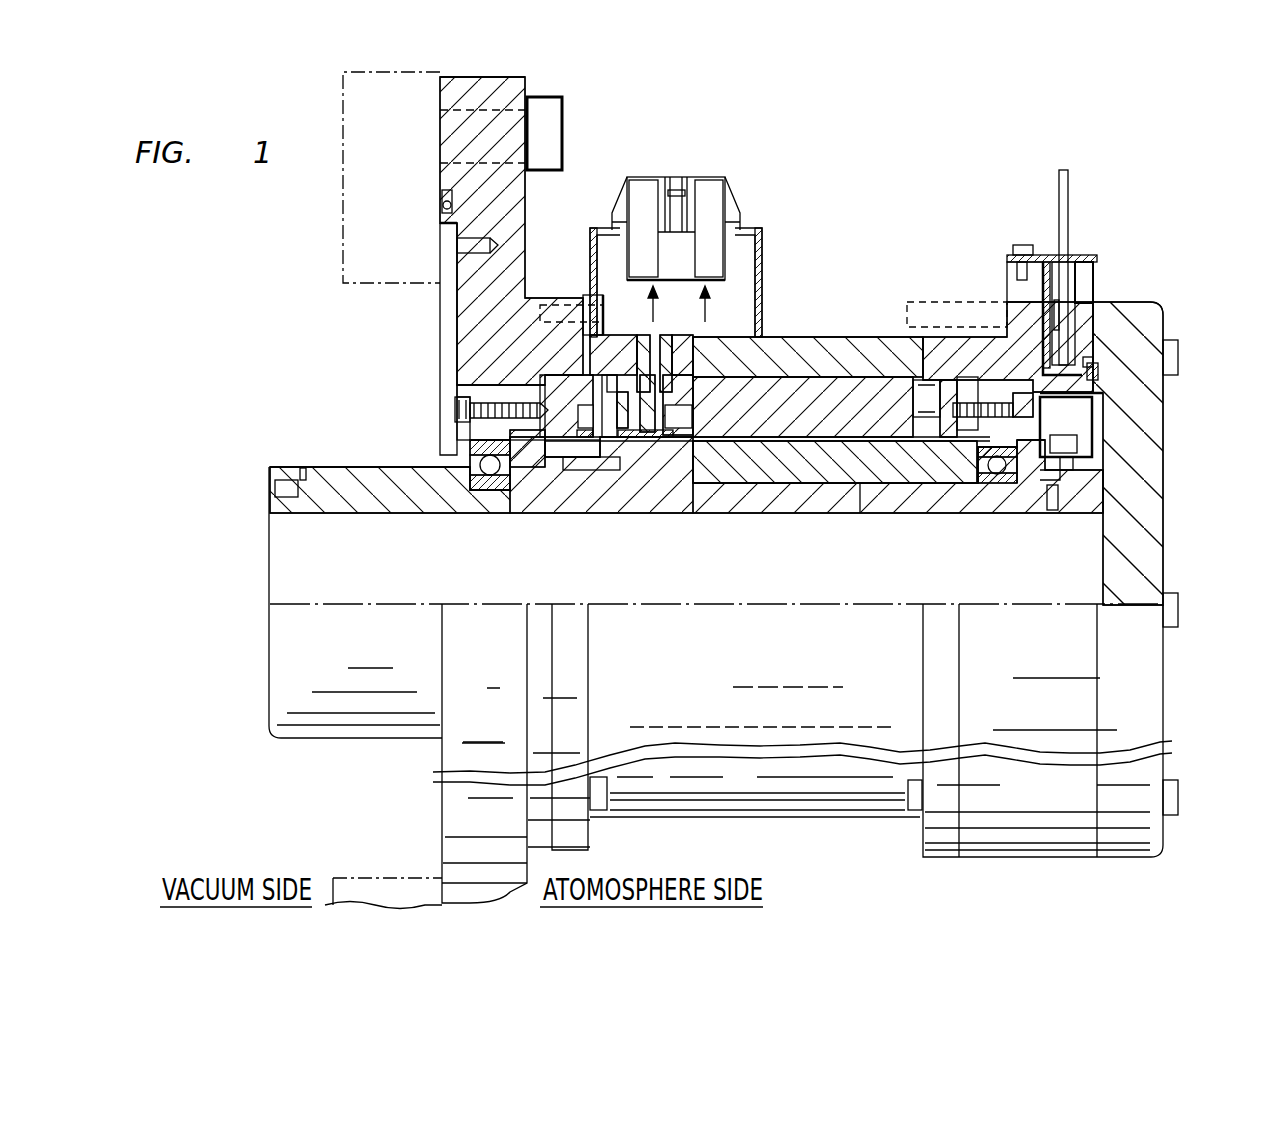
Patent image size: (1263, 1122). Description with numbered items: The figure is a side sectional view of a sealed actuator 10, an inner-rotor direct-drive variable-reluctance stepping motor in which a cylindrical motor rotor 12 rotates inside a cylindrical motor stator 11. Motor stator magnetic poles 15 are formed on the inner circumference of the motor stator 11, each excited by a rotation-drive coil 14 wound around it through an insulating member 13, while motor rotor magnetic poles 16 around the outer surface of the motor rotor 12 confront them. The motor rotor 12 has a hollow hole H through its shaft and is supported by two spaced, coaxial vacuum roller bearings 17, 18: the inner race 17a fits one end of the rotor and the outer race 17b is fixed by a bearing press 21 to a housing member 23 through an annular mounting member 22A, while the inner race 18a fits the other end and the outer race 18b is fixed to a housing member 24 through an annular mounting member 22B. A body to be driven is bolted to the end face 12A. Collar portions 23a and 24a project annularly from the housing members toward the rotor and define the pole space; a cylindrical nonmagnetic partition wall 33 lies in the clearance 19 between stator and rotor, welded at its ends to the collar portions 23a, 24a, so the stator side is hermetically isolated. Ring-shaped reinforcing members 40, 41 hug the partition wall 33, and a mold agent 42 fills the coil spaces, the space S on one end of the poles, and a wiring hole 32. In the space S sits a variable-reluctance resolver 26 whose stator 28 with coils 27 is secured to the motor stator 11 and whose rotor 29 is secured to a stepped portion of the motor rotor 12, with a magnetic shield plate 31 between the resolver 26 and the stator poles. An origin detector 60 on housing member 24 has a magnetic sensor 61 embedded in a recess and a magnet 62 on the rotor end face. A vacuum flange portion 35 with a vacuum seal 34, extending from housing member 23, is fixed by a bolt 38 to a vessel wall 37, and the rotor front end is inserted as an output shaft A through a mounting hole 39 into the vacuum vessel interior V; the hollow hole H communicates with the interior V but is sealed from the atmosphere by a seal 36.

The sealed actuator 10 is at (868, 160).
The motor stator 11 is at (827, 345).
The motor rotor 12 is at (620, 497).
The end face 12A is at (270, 497).
The insulating member 13 is at (905, 513).
The rotation-drive coil 14 is at (947, 390).
The motor stator magnetic pole 15 is at (857, 400).
The motor rotor magnetic pole 16 is at (770, 473).
The vacuum roller bearing 17 is at (492, 490).
The inner race 17a is at (470, 470).
The outer race 17b is at (473, 453).
The vacuum roller bearing 18 is at (990, 483).
The inner race 18a is at (1045, 517).
The outer race 18b is at (1045, 467).
The clearance 19 is at (720, 443).
The bearing press 21 is at (443, 430).
The annular mounting member 22A is at (493, 403).
The annular mounting member 22B is at (1062, 437).
The housing member 23 is at (512, 200).
The collar portion 23a is at (440, 328).
The housing member 24 is at (1005, 302).
The collar portion 24a is at (962, 433).
The variable-reluctance resolver 26 is at (610, 368).
The coil 27 is at (577, 463).
The stator 28 is at (807, 337).
The rotor 29 is at (600, 470).
The magnetic shield plate 31 is at (665, 437).
The wiring hole 32 is at (733, 303).
The partition wall 33 is at (860, 493).
The vacuum seal 34 is at (442, 195).
The vacuum flange portion 35 is at (530, 84).
The seal 36 is at (1103, 382).
The vessel wall 37 is at (343, 245).
The bolt 38 is at (563, 119).
The mounting hole 39 is at (400, 878).
The reinforcing member 40 is at (648, 440).
The reinforcing member 41 is at (690, 437).
The mold agent 42 is at (537, 330).
The origin detector 60 is at (1096, 278).
The magnetic sensor 61 is at (1070, 343).
The magnet 62 is at (1080, 417).
The output shaft A is at (276, 467).
The hollow hole H is at (298, 592).
The space S is at (580, 330).
The vacuum vessel interior V is at (278, 848).